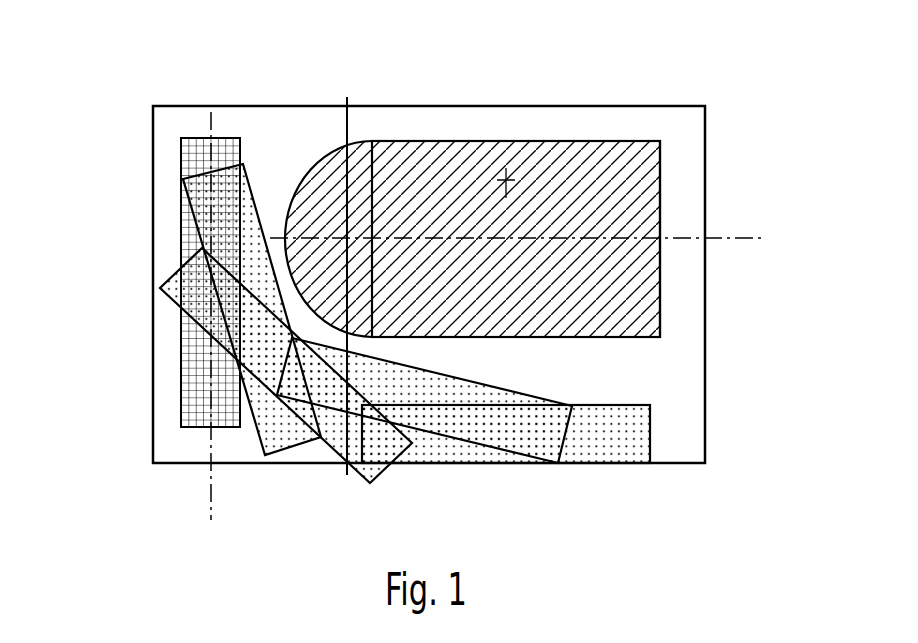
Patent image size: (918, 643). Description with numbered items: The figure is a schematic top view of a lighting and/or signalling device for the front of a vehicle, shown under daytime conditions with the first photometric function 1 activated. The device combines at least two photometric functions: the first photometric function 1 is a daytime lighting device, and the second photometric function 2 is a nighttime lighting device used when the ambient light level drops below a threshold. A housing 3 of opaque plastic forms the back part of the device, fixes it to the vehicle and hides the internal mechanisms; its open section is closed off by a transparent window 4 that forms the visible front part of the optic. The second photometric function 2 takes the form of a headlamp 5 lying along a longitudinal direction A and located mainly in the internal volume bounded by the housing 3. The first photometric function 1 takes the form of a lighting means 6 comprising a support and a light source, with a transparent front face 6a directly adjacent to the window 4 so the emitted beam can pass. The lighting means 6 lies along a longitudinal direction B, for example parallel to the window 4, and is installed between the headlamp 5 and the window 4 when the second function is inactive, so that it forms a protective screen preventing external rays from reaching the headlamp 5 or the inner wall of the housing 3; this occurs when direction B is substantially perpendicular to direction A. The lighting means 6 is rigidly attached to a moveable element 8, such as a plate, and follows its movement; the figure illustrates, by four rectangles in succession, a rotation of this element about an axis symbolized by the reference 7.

The first photometric function 1 is at (410, 271).
The second photometric function 2 is at (541, 175).
The housing 3 is at (372, 238).
The transparent window 4 is at (155, 432).
The headlamp 5 is at (637, 208).
The lighting means 6 is at (131, 275).
The front face 6a is at (182, 368).
The axis of rotation 7 is at (518, 177).
The moveable element 8 is at (265, 150).
The longitudinal direction A is at (742, 242).
The longitudinal direction B is at (213, 485).